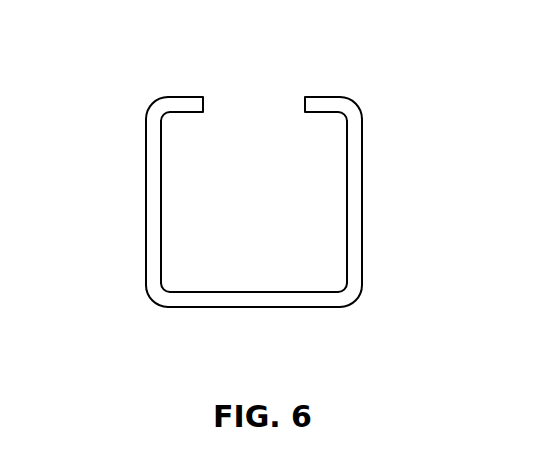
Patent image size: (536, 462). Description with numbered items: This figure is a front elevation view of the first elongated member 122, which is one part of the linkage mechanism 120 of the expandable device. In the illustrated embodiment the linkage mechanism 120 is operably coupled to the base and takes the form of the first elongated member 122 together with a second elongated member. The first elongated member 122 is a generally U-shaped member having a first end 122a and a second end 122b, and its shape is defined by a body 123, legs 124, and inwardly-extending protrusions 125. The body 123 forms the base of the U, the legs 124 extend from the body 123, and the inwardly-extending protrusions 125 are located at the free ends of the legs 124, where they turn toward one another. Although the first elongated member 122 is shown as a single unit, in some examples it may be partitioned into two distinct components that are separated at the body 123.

The linkage mechanism 120 is at (262, 199).
The first elongated member 122 is at (352, 177).
The first end 122a is at (154, 322).
The second end 122b is at (144, 79).
The body 123 is at (290, 300).
The legs 124 is at (147, 215).
The inwardly-extending protrusions 125 is at (187, 96).